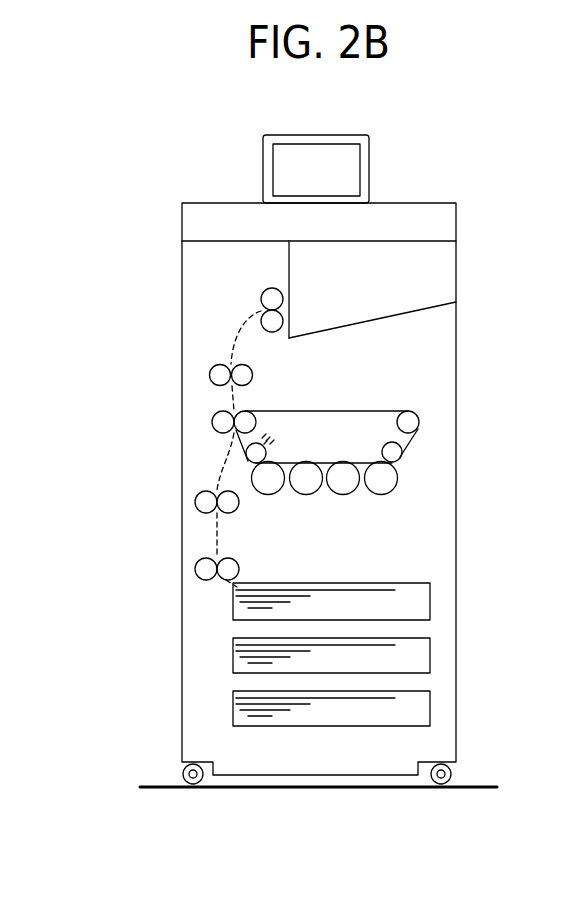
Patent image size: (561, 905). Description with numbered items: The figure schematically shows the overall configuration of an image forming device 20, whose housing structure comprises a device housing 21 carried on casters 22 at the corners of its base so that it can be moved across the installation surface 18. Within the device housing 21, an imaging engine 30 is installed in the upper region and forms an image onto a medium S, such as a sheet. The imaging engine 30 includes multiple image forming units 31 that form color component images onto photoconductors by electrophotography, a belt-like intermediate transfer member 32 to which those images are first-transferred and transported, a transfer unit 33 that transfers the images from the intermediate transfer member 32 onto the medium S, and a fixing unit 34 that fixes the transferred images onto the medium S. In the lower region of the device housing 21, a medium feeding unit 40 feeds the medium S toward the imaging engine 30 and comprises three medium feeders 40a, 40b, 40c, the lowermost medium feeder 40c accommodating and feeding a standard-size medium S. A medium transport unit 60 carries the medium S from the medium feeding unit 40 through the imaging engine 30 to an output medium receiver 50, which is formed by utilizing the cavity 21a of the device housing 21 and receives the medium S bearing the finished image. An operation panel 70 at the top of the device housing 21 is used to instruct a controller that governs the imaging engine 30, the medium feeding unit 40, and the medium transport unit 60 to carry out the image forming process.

The installation surface 18 is at (162, 787).
The image forming device 20 is at (463, 407).
The device housing 21 is at (456, 452).
The cavity 21a is at (407, 267).
The casters 22 is at (460, 790).
The imaging engine 30 is at (403, 397).
The image forming units 31 is at (395, 485).
The intermediate transfer member 32 is at (318, 411).
The transfer unit 33 is at (212, 423).
The fixing unit 34 is at (209, 375).
The medium feeding unit 40 is at (448, 615).
The medium feeder 40a is at (373, 569).
The medium feeder 40b is at (430, 651).
The medium feeder 40c is at (430, 703).
The output medium receiver 50 is at (390, 316).
The medium transport unit 60 is at (208, 520).
The operation panel 70 is at (369, 154).
The medium S is at (403, 583).